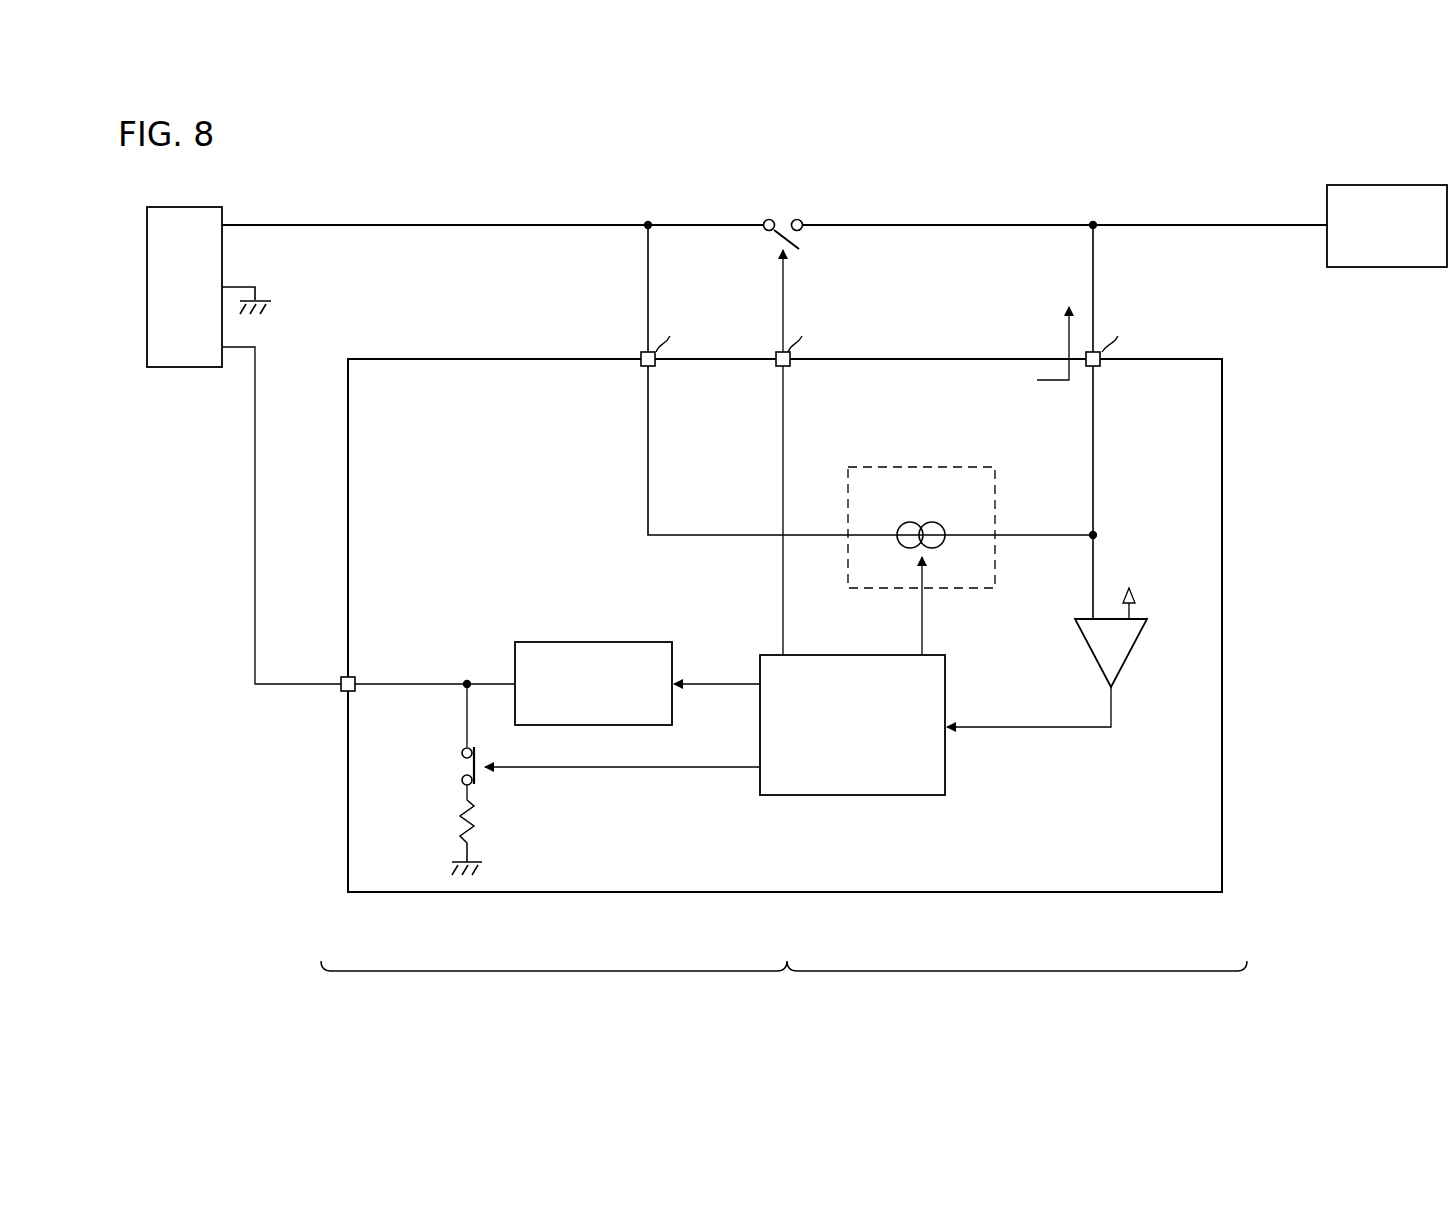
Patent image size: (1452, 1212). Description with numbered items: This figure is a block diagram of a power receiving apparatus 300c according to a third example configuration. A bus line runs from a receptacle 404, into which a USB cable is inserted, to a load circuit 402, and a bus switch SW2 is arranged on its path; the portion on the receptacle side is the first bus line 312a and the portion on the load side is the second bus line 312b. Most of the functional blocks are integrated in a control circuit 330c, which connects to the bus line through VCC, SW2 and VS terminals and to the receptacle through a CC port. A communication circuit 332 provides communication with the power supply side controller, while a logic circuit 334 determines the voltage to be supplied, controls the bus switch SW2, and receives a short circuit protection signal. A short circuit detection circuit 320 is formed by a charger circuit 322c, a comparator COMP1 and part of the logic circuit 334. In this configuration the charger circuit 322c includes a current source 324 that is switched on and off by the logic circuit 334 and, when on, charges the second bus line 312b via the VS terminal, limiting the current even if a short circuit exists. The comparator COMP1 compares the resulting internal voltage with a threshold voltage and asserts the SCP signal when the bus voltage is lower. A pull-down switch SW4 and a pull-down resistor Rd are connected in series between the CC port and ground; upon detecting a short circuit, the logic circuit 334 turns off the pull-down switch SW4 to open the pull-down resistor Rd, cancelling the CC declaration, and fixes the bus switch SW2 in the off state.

The receptacle 404 is at (170, 207).
The load circuit 402 is at (1382, 186).
The first bus line 312a is at (594, 225).
The second bus line 312b is at (954, 225).
The control circuit 330c is at (980, 892).
The communication circuit 332 is at (620, 626).
The logic circuit 334 is at (860, 795).
The charger circuit 322c is at (933, 501).
The short circuit detection circuit 320 is at (1031, 585).
The current source 324 is at (934, 522).
The power receiving apparatus 300c is at (784, 989).
The bus switch SW2 is at (770, 250).
The pull-down switch SW4 is at (452, 770).
The pull-down resistor Rd is at (480, 826).
The comparator COMP1 is at (1135, 663).